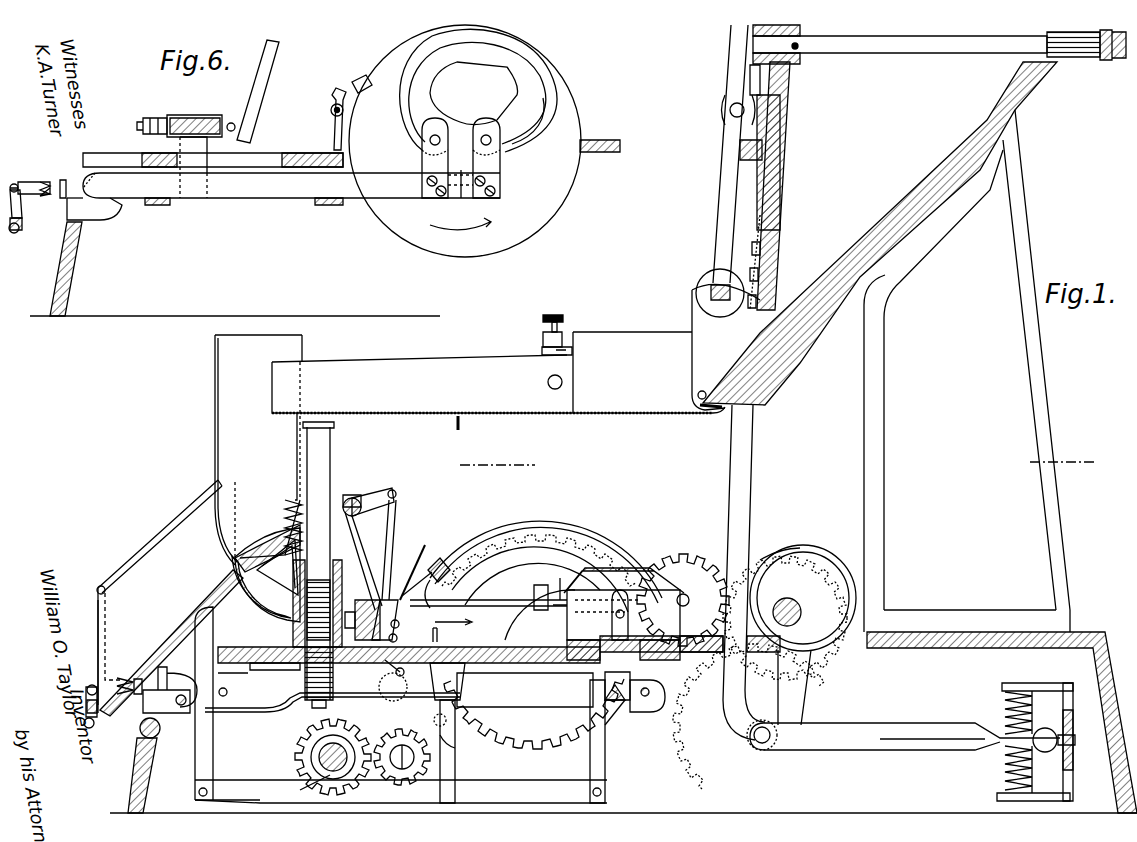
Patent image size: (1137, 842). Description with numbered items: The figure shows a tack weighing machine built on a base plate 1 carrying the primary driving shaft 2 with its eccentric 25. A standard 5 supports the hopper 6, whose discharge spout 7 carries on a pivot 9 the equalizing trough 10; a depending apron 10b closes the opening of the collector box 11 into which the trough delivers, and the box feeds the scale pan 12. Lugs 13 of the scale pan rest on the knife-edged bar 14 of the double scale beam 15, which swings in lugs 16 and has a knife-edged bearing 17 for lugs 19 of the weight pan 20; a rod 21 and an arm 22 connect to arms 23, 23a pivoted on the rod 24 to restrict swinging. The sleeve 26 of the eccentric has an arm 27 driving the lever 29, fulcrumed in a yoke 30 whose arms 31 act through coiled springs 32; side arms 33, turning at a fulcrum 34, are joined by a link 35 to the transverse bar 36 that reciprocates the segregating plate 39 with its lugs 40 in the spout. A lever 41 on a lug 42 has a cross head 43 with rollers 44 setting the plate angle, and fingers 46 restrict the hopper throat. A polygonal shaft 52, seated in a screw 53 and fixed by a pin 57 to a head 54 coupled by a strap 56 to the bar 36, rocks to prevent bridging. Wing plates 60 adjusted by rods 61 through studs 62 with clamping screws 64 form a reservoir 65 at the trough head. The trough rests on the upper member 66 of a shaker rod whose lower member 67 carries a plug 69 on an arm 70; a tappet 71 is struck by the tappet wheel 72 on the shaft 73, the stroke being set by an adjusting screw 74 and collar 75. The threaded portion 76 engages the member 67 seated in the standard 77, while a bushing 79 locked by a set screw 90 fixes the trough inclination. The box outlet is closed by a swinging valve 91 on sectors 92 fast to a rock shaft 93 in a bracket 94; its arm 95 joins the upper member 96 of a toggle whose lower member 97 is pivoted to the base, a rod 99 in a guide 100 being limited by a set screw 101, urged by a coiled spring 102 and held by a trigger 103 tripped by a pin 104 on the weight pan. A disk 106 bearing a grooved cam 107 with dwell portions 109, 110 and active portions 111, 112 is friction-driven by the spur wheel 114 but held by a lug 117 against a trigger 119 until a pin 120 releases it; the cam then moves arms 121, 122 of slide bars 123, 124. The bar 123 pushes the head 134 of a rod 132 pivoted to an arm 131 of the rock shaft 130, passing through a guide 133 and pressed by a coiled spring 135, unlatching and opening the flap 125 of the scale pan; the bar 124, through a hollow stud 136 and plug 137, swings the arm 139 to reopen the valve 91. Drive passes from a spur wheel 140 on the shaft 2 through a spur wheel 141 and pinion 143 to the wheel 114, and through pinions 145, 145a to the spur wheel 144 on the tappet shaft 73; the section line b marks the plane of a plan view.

In FIG. 6, the base or bed plate 1 is at (88, 268).
In FIG. 1, the base or bed plate 1 is at (1128, 702).
In FIG. 1, the primary driving shaft 2 is at (802, 618).
In FIG. 1, the post or standard 5 is at (967, 371).
In FIG. 1, the hopper 6 is at (1022, 98).
In FIG. 1, the discharge spout 7 is at (726, 347).
In FIG. 1, the pivot 9 is at (702, 390).
In FIG. 1, the equalizing trough 10 is at (478, 413).
In FIG. 1, the depending apron 10b is at (298, 443).
In FIG. 1, the collector box 11 is at (258, 450).
In FIG. 1, the scale pan 12 is at (170, 598).
In FIG. 1, the depending lugs 13 is at (170, 685).
In FIG. 1, the knife-edged bar 14 is at (177, 728).
In FIG. 1, the double scale beam 15 is at (525, 690).
In FIG. 1, the lugs 16 is at (395, 664).
In FIG. 1, the knife-edged bearing 17 is at (620, 712).
In FIG. 1, the lugs 19 is at (617, 686).
In FIG. 1, the weight pan 20 is at (676, 672).
In FIG. 1, the depending rod 21 is at (600, 760).
In FIG. 1, the depending arm 22 is at (208, 748).
In FIG. 1, the arm 23 is at (526, 786).
In FIG. 1, the arm 23a is at (237, 790).
In FIG. 1, the rod 24 is at (449, 762).
In FIG. 1, the eccentric 25 is at (803, 598).
In FIG. 1, the sleeve 26 is at (775, 570).
In FIG. 1, the arm 27 is at (794, 687).
In FIG. 1, the lever 29 is at (888, 752).
In FIG. 1, the yoke 30 is at (1072, 708).
In FIG. 1, the upper and lower arms 31 is at (1032, 683).
In FIG. 1, the coiled springs 32 is at (1005, 708).
In FIG. 1, the arm 33 is at (884, 722).
In FIG. 1, the fulcrum 34 is at (1046, 752).
In FIG. 1, the link 35 is at (750, 577).
In FIG. 1, the transverse bar 36 is at (742, 153).
In FIG. 1, the segregating plate 39 is at (755, 220).
In FIG. 1, the studs or lugs 40 is at (762, 250).
In FIG. 1, the lever 41 is at (730, 42).
In FIG. 1, the lug 42 is at (762, 113).
In FIG. 1, the cross head 43 is at (709, 292).
In FIG. 1, the anti-friction rollers 44 is at (702, 276).
In FIG. 1, the fingers 46 is at (780, 182).
In FIG. 1, the longitudinal shaft 52 is at (905, 54).
In FIG. 1, the screw 53 is at (1080, 60).
In FIG. 1, the head 54 is at (798, 66).
In FIG. 1, the strap 56 is at (752, 78).
In FIG. 1, the pin 57 is at (797, 44).
In FIG. 1, the wing plate 60 is at (613, 333).
In FIG. 1, the rod 61 is at (542, 351).
In FIG. 1, the stud 62 is at (543, 338).
In FIG. 1, the clamping screw 64 is at (554, 315).
In FIG. 1, the reservoir 65 is at (600, 391).
In FIG. 1, the upper member of shaker rod 66 is at (325, 457).
In FIG. 1, the lower member of shaker rod 67 is at (305, 690).
In FIG. 1, the plug 69 is at (333, 692).
In FIG. 1, the arm 70 is at (272, 708).
In FIG. 1, the tappet 71 is at (258, 707).
In FIG. 1, the tappet wheel 72 is at (292, 760).
In FIG. 1, the transverse shaft 73 is at (333, 757).
In FIG. 1, the adjusting screw 74 is at (443, 632).
In FIG. 1, the collar 75 is at (419, 717).
In FIG. 1, the threaded portion 76 is at (332, 582).
In FIG. 1, the standard 77 is at (294, 627).
In FIG. 1, the sleeve or bushing 79 is at (278, 567).
In FIG. 1, the set screw 90 is at (362, 547).
In FIG. 1, the swinging valve 91 is at (255, 597).
In FIG. 1, the sector 92 is at (277, 574).
In FIG. 1, the rock shaft 93 is at (365, 497).
In FIG. 1, the bracket 94 is at (353, 497).
In FIG. 1, the arm 95 is at (397, 494).
In FIG. 1, the upper toggle member 96 is at (393, 526).
In FIG. 1, the lower toggle member 97 is at (380, 636).
In FIG. 1, the rod 99 is at (488, 604).
In FIG. 1, the guide 100 is at (535, 592).
In FIG. 1, the set screw 101 is at (362, 615).
In FIG. 1, the coiled spring 102 is at (284, 515).
In FIG. 1, the trigger 103 is at (567, 582).
In FIG. 1, the pin 104 is at (630, 614).
In FIG. 6, the disk 106 is at (465, 141).
In FIG. 1, the disk 106 is at (499, 532).
In FIG. 6, the grooved cam 107 is at (474, 93).
In FIG. 1, the grooved cam 107 is at (548, 568).
In FIG. 6, the dwell portion 109 is at (460, 176).
In FIG. 6, the dwell portion 110 is at (478, 90).
In FIG. 1, the dwell portion 110 is at (618, 560).
In FIG. 6, the active portion 111 is at (477, 93).
In FIG. 1, the active portion 111 is at (532, 584).
In FIG. 6, the active portion 112 is at (527, 121).
In FIG. 1, the spur wheel 114 is at (560, 738).
In FIG. 6, the lug 117 is at (362, 90).
In FIG. 1, the lug 117 is at (532, 560).
In FIG. 6, the trigger 119 is at (336, 100).
In FIG. 1, the trigger 119 is at (429, 588).
In FIG. 6, the pin 120 is at (336, 132).
In FIG. 1, the pin 120 is at (391, 624).
In FIG. 6, the arm 121 is at (422, 160).
In FIG. 6, the arm 122 is at (498, 177).
In FIG. 6, the slide bar 123 is at (283, 186).
In FIG. 6, the slide bar 124 is at (462, 198).
In FIG. 1, the flap 125 is at (98, 636).
In FIG. 6, the rock shaft 130 is at (14, 233).
In FIG. 1, the rock shaft 130 is at (96, 725).
In FIG. 1, the arm 131 is at (88, 703).
In FIG. 6, the rod 132 is at (30, 179).
In FIG. 6, the guide 133 is at (36, 198).
In FIG. 6, the head 134 is at (62, 182).
In FIG. 1, the head 134 is at (136, 696).
In FIG. 6, the coiled spring 135 is at (47, 180).
In FIG. 1, the coiled spring 135 is at (122, 678).
In FIG. 6, the hollow stud 136 is at (192, 120).
In FIG. 6, the plug 137 is at (233, 118).
In FIG. 6, the arm 139 is at (255, 103).
In FIG. 1, the arm 139 is at (398, 553).
In FIG. 1, the spur wheel 140 is at (760, 566).
In FIG. 1, the spur wheel 141 is at (663, 565).
In FIG. 1, the spur pinion 143 is at (687, 592).
In FIG. 1, the spur wheel 144 is at (300, 790).
In FIG. 1, the pinion 145 is at (404, 784).
In FIG. 1, the pinion 145a is at (468, 752).
In FIG. 1, the section line b is at (778, 464).